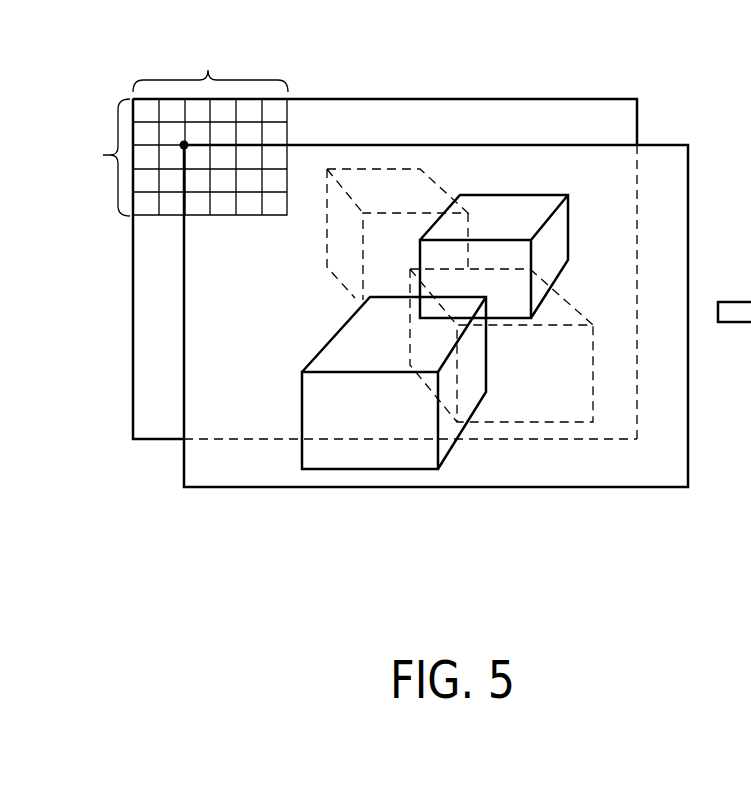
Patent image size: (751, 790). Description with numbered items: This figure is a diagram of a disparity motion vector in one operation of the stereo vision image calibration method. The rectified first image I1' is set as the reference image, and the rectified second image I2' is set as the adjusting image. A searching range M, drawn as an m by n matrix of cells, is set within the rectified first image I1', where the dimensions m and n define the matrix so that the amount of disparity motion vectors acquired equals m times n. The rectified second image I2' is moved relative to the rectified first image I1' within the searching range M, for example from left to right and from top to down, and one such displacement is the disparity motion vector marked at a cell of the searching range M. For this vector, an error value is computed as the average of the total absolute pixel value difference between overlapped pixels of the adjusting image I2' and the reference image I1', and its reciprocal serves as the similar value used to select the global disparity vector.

The rectified first image I1' is at (395, 238).
The rectified second image I2' is at (458, 285).
The searching range M is at (287, 130).
The matrix column dimension m is at (210, 63).
The matrix row dimension n is at (108, 157).